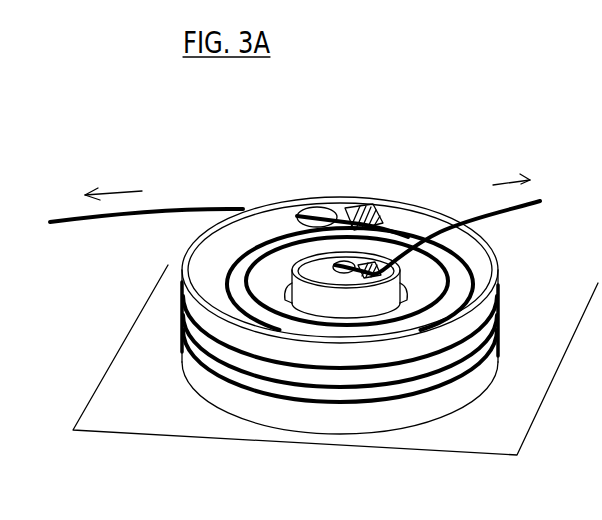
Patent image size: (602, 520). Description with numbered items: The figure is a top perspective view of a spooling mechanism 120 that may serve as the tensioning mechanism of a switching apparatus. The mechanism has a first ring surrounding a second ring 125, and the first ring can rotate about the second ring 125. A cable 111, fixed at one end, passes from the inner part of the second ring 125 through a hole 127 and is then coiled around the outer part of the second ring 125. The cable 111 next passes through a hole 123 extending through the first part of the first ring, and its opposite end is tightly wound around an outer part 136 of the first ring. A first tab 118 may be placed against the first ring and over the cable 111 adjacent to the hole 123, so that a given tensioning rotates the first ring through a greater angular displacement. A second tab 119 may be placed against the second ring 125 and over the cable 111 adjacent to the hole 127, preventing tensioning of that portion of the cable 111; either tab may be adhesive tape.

The cable 111 is at (522, 207).
The first tab 118 is at (367, 205).
The second tab 119 is at (378, 308).
The spooling mechanism 120 is at (387, 103).
The hole 123 is at (314, 207).
The second ring 125 is at (330, 300).
The hole 127 is at (357, 262).
The outer part of the first ring 136 is at (177, 357).